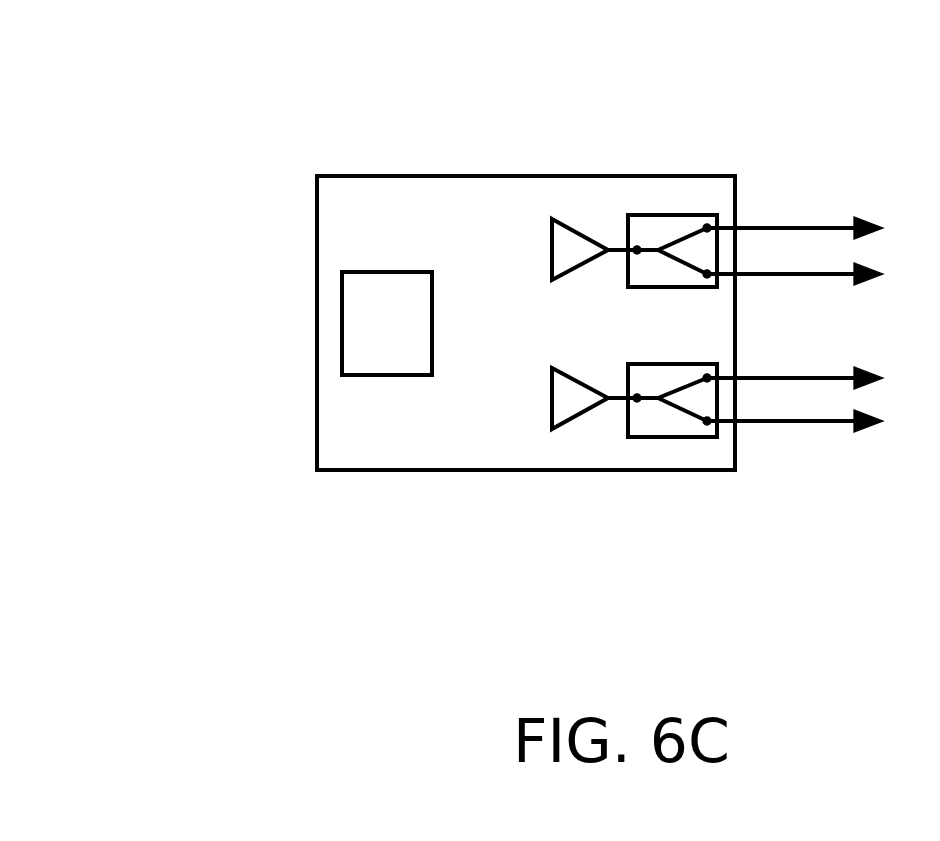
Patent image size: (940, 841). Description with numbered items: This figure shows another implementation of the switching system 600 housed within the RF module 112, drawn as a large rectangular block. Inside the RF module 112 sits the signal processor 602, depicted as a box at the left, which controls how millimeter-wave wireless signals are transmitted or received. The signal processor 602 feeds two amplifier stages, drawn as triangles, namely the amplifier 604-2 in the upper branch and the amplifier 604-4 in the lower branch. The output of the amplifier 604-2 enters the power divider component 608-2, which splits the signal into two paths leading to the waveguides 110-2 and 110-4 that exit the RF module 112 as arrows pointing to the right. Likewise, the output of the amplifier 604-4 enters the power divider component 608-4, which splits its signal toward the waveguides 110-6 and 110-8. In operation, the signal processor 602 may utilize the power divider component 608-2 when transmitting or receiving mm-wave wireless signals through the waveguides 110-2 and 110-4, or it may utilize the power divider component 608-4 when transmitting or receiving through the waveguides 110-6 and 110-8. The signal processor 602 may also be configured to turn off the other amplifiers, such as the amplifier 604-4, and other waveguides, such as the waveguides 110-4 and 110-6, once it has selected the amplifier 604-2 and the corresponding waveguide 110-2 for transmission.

The switching system 600 is at (145, 58).
The RF module 112 is at (315, 258).
The signal processor 602 is at (387, 323).
The amplifier 604-2 is at (551, 250).
The amplifier 604-4 is at (551, 395).
The power divider component 608-2 is at (668, 214).
The power divider component 608-4 is at (668, 363).
The waveguide 110-2 is at (845, 222).
The waveguide 110-4 is at (845, 268).
The waveguide 110-6 is at (845, 372).
The waveguide 110-8 is at (845, 416).